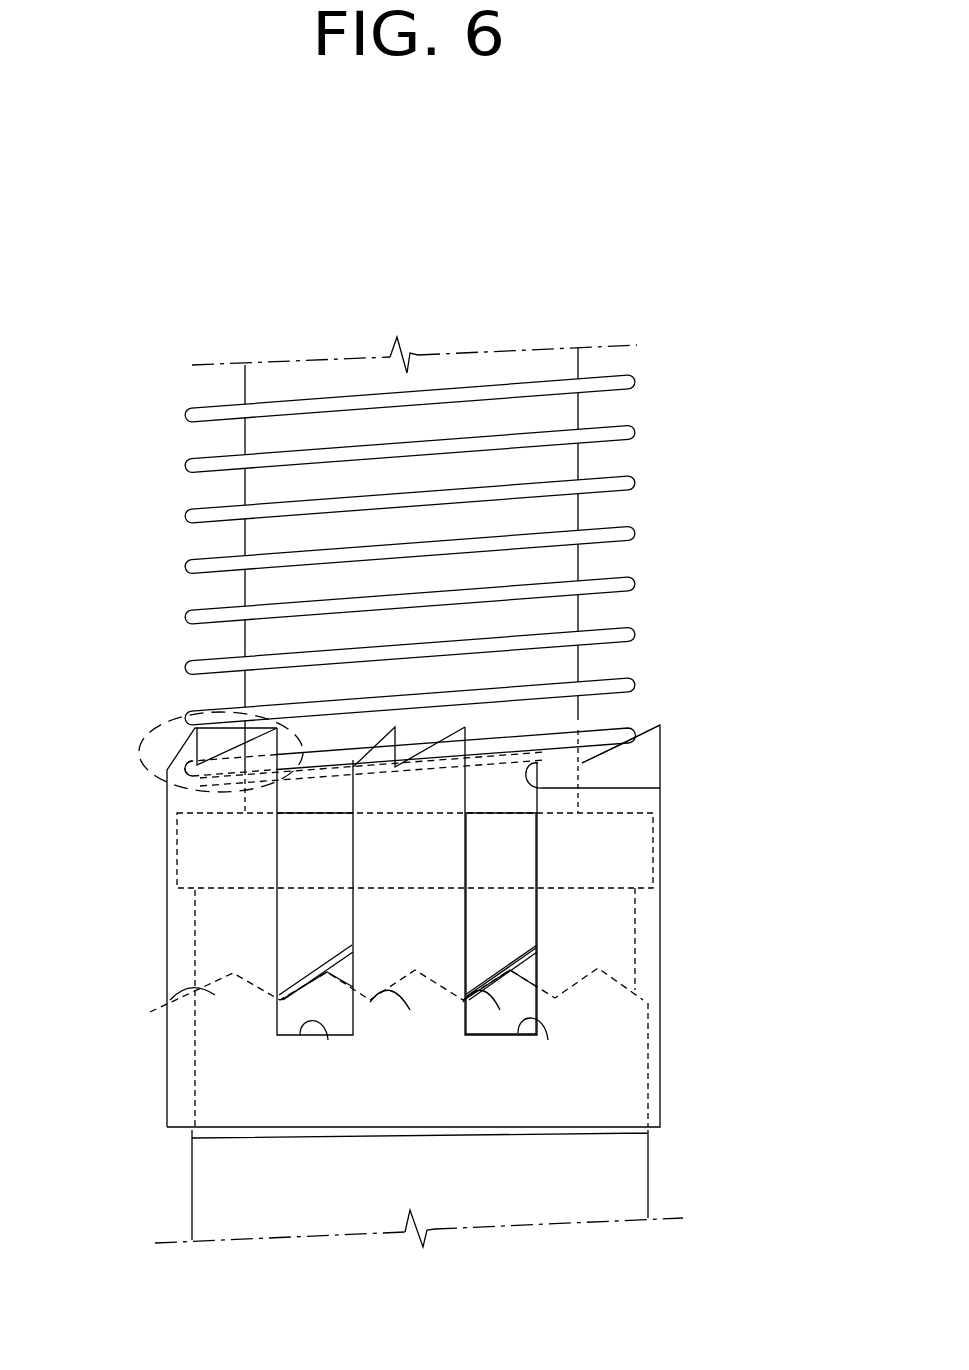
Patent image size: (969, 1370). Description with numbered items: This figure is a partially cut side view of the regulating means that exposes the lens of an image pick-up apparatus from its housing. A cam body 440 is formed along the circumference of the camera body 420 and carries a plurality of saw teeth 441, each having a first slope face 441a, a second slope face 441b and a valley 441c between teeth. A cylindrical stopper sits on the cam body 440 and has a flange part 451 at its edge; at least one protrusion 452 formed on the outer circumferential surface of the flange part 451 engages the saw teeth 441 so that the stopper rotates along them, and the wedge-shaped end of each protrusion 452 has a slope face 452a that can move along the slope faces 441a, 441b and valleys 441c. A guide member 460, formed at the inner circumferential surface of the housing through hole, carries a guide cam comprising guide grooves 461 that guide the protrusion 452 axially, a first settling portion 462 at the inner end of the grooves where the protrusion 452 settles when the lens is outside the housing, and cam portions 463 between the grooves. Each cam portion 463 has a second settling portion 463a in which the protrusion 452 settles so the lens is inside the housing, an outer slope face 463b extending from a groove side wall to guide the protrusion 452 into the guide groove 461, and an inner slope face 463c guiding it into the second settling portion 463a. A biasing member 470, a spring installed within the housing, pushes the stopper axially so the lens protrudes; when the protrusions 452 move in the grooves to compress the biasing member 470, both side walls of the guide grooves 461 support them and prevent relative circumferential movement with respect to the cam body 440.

The camera body 420 is at (655, 1180).
The cam body 440 is at (650, 1057).
The saw teeth 441 is at (648, 1005).
The slope face 441a is at (265, 985).
The slope face 441b is at (233, 973).
The valley 441c is at (500, 1010).
The flange part 451 is at (200, 850).
The protrusion 452 is at (517, 905).
The slope face 452a is at (537, 955).
The guide member 460 is at (653, 1105).
The guide groove 461 is at (283, 937).
The first settling portion 462 is at (328, 1040).
The cam portion 463 is at (158, 722).
The second settling portion 463a is at (623, 750).
The outer slope face 463b is at (622, 788).
The inner slope face 463c is at (650, 724).
The biasing member 470 is at (636, 482).